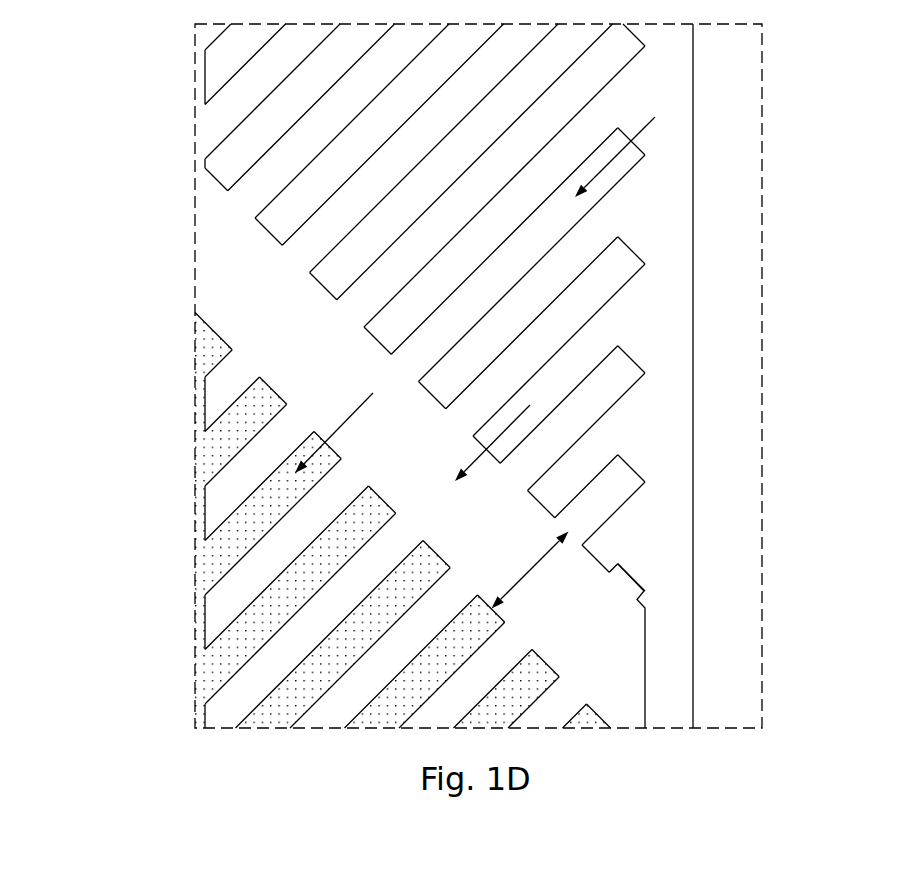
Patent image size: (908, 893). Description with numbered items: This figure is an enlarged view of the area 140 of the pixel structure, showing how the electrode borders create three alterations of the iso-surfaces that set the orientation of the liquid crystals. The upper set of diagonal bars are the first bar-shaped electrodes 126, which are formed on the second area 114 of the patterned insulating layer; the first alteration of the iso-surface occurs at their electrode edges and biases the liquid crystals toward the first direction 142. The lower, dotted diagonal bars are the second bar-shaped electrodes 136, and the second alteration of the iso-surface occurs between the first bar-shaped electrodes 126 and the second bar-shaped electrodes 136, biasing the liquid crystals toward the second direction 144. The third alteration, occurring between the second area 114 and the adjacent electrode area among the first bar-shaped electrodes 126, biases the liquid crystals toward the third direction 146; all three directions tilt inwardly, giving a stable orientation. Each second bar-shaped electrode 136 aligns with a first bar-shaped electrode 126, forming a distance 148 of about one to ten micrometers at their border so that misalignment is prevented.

The second area 114 is at (585, 355).
The first bar-shaped electrodes 126 is at (640, 147).
The second bar-shaped electrodes 136 is at (215, 555).
The area 140 is at (762, 327).
The first direction 142 is at (607, 167).
The second direction 144 is at (345, 418).
The third direction 146 is at (508, 423).
The distance 148 is at (518, 585).